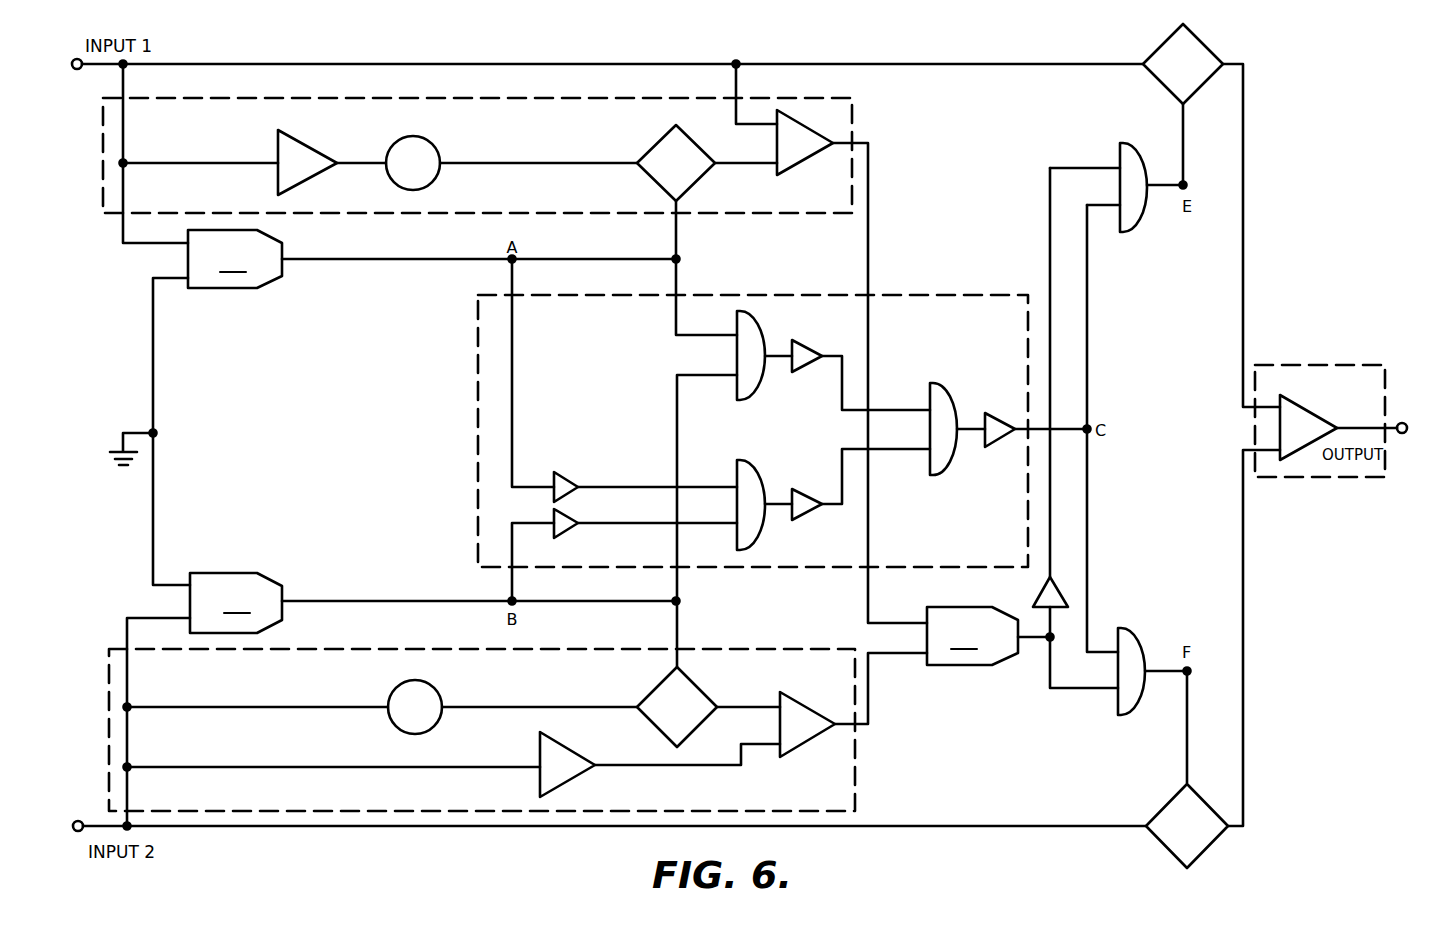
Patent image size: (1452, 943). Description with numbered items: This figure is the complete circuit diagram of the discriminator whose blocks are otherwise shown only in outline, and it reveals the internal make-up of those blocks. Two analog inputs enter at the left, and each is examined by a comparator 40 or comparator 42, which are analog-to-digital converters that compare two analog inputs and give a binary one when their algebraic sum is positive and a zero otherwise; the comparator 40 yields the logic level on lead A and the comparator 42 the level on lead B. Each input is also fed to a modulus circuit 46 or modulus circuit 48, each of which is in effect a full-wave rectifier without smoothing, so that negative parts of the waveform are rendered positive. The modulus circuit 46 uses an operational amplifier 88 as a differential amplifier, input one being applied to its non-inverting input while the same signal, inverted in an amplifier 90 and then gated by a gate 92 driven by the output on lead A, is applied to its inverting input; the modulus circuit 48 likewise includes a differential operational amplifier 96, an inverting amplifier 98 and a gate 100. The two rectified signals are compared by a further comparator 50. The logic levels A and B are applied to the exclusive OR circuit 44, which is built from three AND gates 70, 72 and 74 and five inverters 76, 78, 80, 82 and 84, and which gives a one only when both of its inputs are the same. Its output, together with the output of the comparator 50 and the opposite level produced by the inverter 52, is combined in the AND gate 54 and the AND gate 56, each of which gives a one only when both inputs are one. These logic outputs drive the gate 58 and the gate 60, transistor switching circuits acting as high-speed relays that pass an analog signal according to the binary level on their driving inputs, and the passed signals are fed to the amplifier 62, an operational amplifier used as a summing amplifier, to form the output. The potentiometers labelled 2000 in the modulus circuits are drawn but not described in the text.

The comparator 40 is at (270, 296).
The comparator 42 is at (270, 562).
The exclusive OR circuit 44 is at (957, 295).
The modulus circuit 46 is at (853, 128).
The modulus circuit 48 is at (857, 782).
The comparator 50 is at (1005, 661).
The inverter 52 is at (1098, 586).
The AND gate 54 is at (1117, 160).
The AND gate 56 is at (1143, 640).
The gate 58 is at (1162, 80).
The gate 60 is at (1166, 806).
The amplifier 62 is at (1340, 365).
The AND gate 70 is at (762, 328).
The AND gate 72 is at (753, 462).
The AND gate 74 is at (951, 388).
The inverter 76 is at (541, 450).
The inverter 78 is at (597, 509).
The inverter 80 is at (806, 385).
The inverter 82 is at (810, 483).
The inverter 84 is at (998, 470).
The operational amplifier 88 is at (797, 160).
The amplifier 90 is at (303, 146).
The gate 92 is at (647, 178).
The differential operational amplifier 96 is at (797, 745).
The inverting amplifier 98 is at (575, 776).
The gate 100 is at (656, 722).
The potentiometer 2000 is at (425, 137).